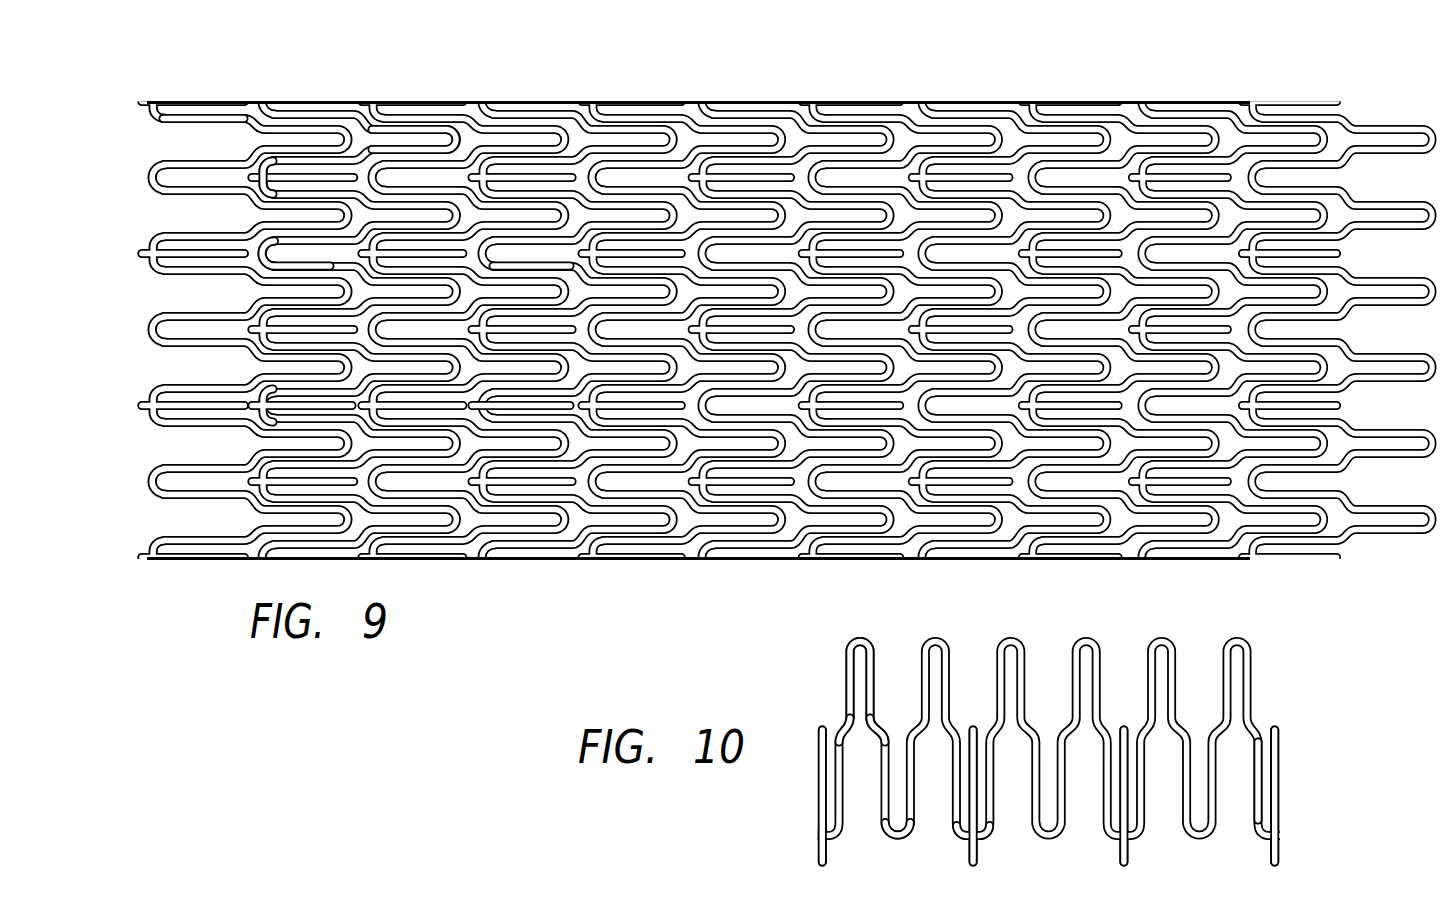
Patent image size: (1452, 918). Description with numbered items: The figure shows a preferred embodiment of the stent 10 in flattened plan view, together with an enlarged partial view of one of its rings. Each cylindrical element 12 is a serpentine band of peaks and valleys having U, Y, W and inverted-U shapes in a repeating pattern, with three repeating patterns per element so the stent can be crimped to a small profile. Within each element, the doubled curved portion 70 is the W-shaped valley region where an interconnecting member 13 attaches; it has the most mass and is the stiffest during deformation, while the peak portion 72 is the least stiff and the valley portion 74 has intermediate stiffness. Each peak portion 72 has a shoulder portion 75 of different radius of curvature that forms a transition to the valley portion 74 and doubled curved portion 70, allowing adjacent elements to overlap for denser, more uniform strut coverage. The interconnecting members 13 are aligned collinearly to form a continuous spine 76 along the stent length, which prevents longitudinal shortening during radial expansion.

In FIG. 9, the stent 10 is at (657, 100).
In FIG. 9, the cylindrical element 12 is at (199, 110).
In FIG. 10, the cylindrical element 12 is at (1250, 725).
In FIG. 9, the interconnecting member 13 is at (302, 258).
In FIG. 10, the interconnecting member 13 is at (977, 793).
In FIG. 9, the doubled curved portion 70 is at (266, 424).
In FIG. 10, the doubled curved portion 70 is at (1273, 865).
In FIG. 9, the peak portion 72 is at (464, 148).
In FIG. 10, the peak portion 72 is at (860, 637).
In FIG. 9, the valley portion 74 is at (284, 172).
In FIG. 10, the valley portion 74 is at (898, 826).
In FIG. 10, the shoulder portion 75 is at (845, 727).
In FIG. 9, the continuous spine 76 is at (536, 405).